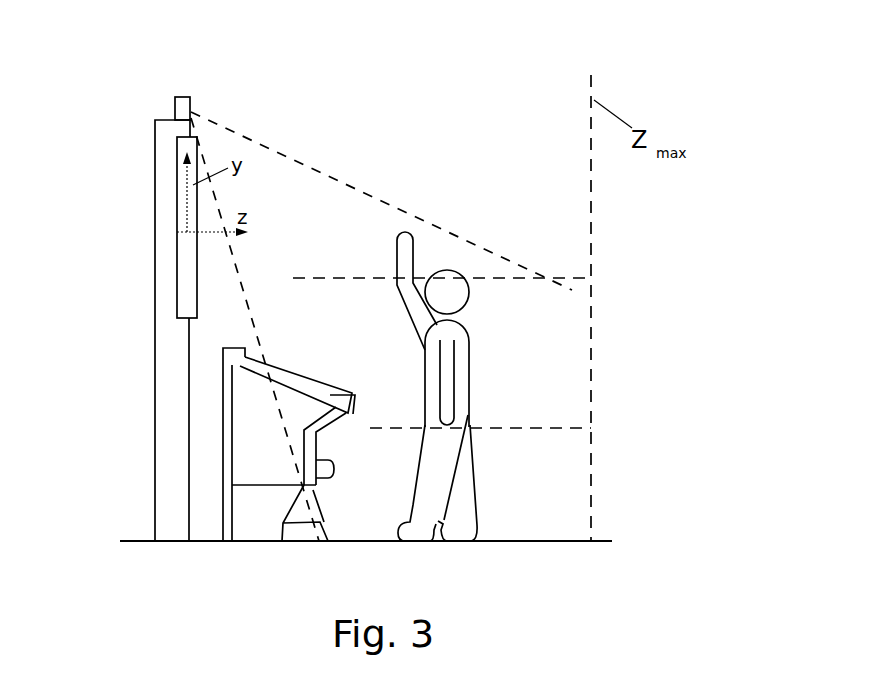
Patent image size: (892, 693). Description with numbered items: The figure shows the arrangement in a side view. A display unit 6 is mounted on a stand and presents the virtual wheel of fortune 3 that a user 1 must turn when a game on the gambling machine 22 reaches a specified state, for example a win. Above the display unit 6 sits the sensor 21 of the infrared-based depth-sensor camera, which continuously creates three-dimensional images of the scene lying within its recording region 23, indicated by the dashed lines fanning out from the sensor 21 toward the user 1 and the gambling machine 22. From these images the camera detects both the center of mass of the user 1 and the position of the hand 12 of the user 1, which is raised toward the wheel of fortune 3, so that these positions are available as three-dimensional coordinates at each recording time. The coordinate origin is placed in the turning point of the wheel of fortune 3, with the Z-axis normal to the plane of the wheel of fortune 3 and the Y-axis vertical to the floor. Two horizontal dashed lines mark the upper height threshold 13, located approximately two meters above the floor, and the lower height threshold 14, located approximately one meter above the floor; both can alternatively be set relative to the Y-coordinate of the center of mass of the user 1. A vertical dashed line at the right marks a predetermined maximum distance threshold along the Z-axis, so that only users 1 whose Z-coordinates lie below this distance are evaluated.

The user 1 is at (463, 355).
The wheel of fortune 3 is at (150, 422).
The display unit 6 is at (187, 283).
The hand 12 is at (410, 235).
The upper height threshold 13 is at (577, 278).
The lower height threshold 14 is at (557, 428).
The sensor 21 is at (191, 112).
The gambling machine 22 is at (268, 450).
The recording region 23 is at (311, 167).